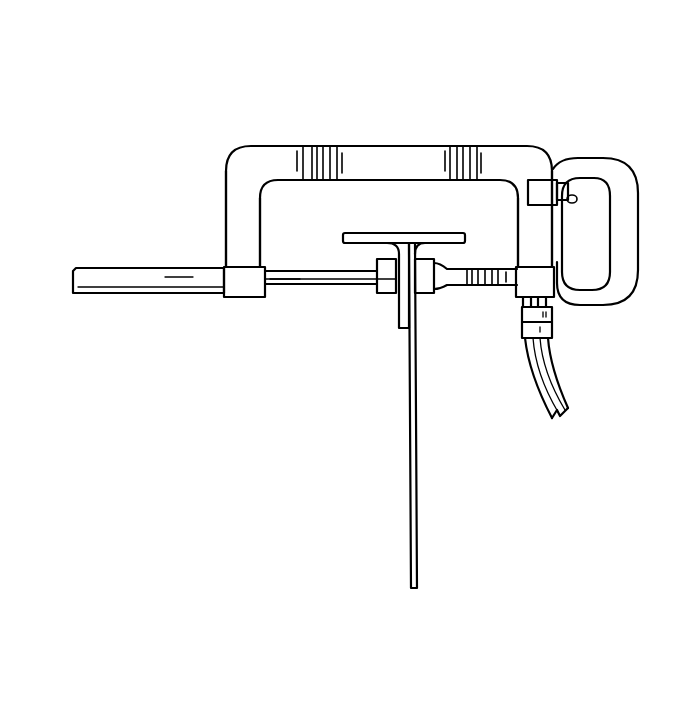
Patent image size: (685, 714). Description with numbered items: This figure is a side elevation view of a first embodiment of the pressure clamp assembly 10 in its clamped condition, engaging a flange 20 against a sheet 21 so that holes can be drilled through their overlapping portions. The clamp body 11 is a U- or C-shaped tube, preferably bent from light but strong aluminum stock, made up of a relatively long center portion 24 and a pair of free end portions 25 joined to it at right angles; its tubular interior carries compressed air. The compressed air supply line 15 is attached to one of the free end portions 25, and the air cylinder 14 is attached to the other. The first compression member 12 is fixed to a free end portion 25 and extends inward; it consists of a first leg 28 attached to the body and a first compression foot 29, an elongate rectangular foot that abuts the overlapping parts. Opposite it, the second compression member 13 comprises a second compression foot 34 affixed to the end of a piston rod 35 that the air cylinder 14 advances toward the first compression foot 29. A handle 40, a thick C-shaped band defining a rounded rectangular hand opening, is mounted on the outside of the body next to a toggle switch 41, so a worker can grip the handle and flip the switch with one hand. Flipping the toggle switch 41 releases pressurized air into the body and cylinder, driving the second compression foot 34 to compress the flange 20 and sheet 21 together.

The pressure clamp assembly 10 is at (525, 97).
The clamp body 11 is at (237, 170).
The first compression member 12 is at (473, 287).
The second compression member 13 is at (376, 292).
The air cylinder 14 is at (115, 285).
The compressed air supply line 15 is at (567, 409).
The flange 20 is at (387, 232).
The sheet 21 is at (418, 545).
The center portion 24 is at (388, 153).
The free end portions 25 is at (237, 228).
The first leg 28 is at (497, 286).
The first compression foot 29 is at (428, 294).
The second compression foot 34 is at (390, 294).
The piston rod 35 is at (283, 281).
The handle 40 is at (627, 183).
The toggle switch 41 is at (577, 198).